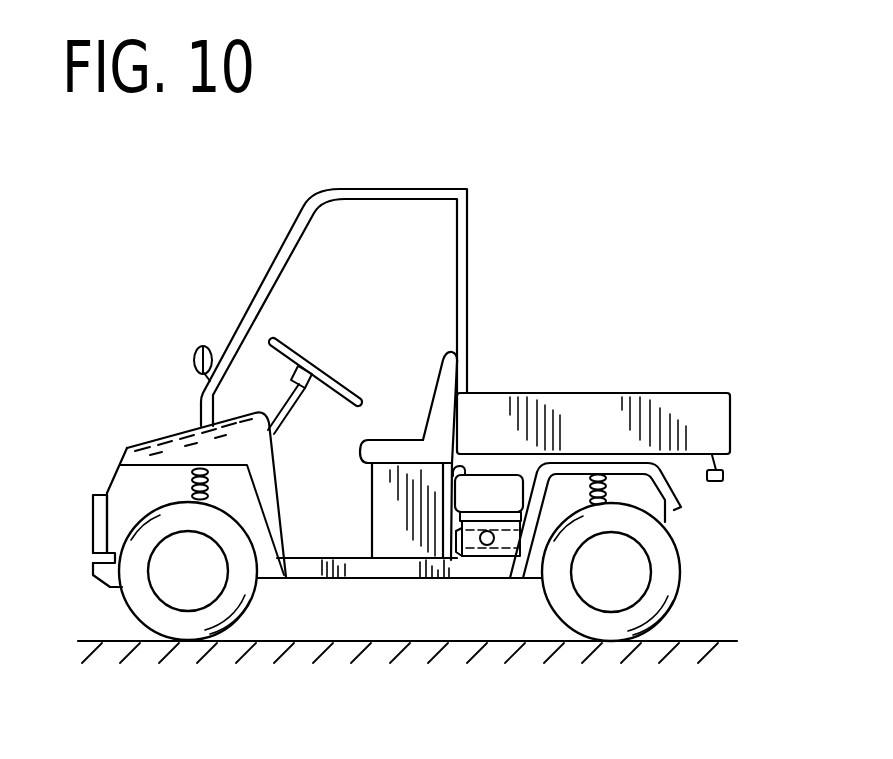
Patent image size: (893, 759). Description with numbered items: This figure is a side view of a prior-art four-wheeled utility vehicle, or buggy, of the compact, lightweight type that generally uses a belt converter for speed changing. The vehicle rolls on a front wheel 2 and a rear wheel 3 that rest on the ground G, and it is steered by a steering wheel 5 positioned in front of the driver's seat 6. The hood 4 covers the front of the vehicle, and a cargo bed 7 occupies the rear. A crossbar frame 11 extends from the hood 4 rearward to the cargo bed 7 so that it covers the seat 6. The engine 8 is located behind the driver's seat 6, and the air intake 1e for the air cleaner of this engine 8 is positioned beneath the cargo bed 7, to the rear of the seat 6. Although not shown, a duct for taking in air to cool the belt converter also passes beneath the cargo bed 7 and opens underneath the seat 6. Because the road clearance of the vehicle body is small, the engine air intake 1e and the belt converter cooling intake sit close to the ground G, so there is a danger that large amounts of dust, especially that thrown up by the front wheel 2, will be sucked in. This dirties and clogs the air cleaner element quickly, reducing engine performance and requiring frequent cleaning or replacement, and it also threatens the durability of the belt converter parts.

The crossbar frame 11 is at (404, 190).
The hood 4 is at (162, 443).
The steering wheel 5 is at (308, 370).
The driver's seat 6 is at (442, 373).
The cargo bed 7 is at (657, 393).
The air intake 1e is at (464, 470).
The engine 8 is at (468, 546).
The front wheel 2 is at (183, 627).
The rear wheel 3 is at (611, 627).
The ground G is at (668, 641).